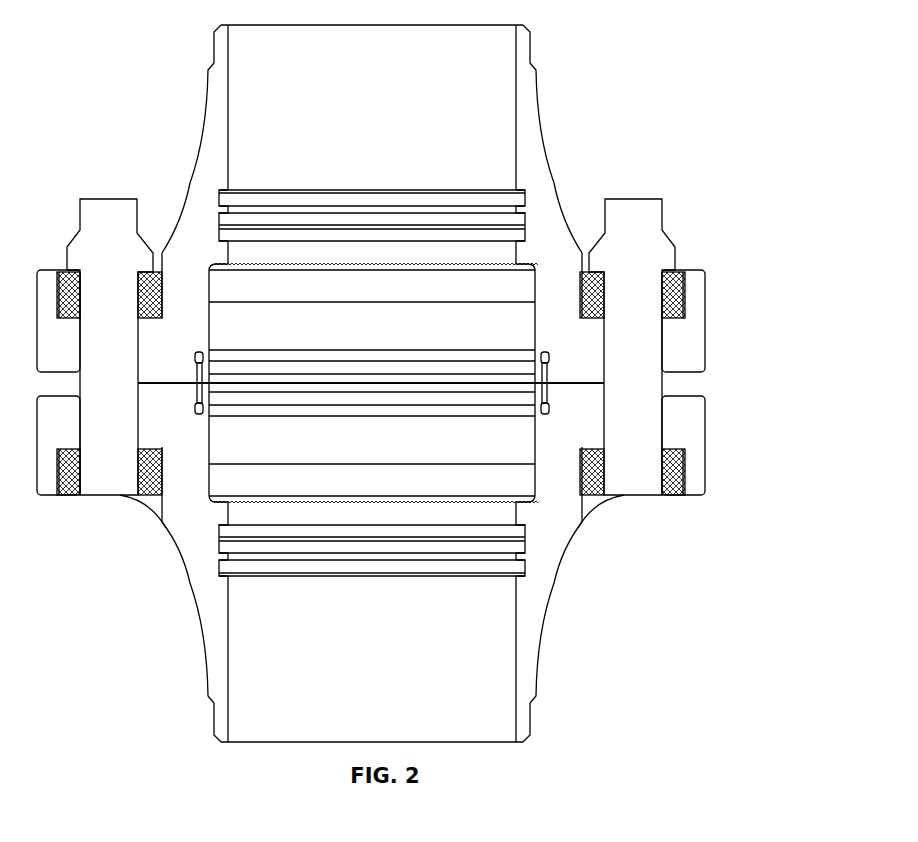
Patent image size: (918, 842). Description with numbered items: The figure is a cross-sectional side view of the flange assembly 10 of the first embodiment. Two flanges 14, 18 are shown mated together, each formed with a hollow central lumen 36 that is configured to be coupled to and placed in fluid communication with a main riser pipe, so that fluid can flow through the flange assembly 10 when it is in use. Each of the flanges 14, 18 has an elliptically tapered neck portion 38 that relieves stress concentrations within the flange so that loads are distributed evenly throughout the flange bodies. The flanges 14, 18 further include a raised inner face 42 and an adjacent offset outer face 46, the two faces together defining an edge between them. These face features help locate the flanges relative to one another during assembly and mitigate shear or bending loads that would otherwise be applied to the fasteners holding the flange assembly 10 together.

The flange assembly 10 is at (168, 71).
The flange 14 is at (207, 150).
The flange 18 is at (208, 618).
The hollow central lumen 36 is at (507, 63).
The elliptically tapered neck portion 38 is at (552, 180).
The raised inner face 42 is at (573, 383).
The offset outer face 46 is at (683, 373).